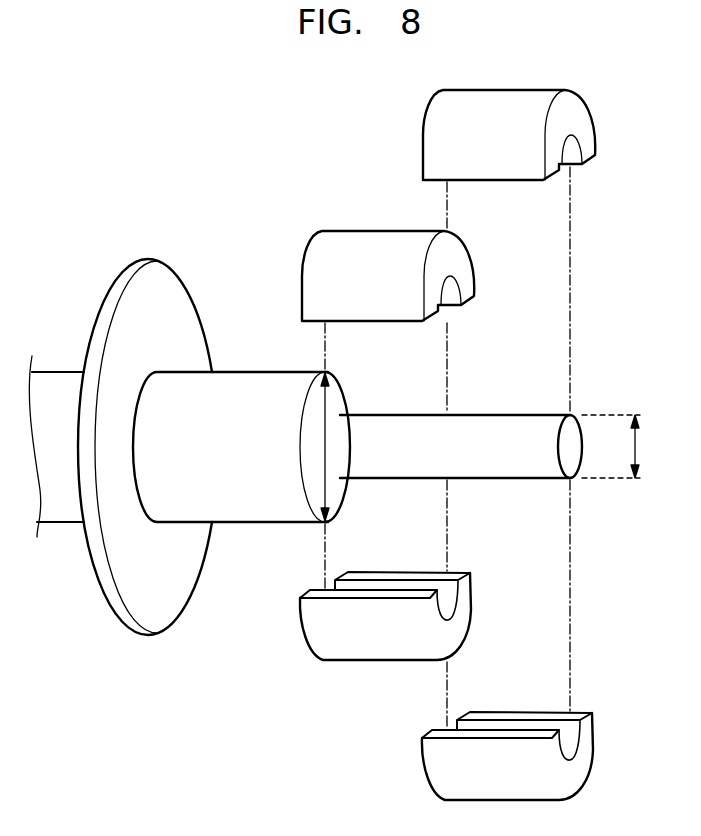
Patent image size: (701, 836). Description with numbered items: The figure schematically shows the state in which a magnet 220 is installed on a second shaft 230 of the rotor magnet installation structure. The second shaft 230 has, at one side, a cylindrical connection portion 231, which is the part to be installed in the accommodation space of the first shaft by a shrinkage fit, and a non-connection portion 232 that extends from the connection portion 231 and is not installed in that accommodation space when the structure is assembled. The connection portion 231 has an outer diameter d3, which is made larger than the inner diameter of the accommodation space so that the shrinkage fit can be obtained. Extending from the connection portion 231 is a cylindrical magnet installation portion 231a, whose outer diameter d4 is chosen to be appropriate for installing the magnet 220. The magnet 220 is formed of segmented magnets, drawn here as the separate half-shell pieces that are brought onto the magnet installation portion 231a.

The magnet 220 is at (343, 242).
The second shaft 230 is at (238, 677).
The connection portion 231 is at (248, 502).
The magnet installation portion 231a is at (515, 470).
The non-connection portion 232 is at (60, 507).
The outer diameter of the connection portion d3 is at (323, 448).
The outer diameter of the magnet installation portion d4 is at (627, 446).